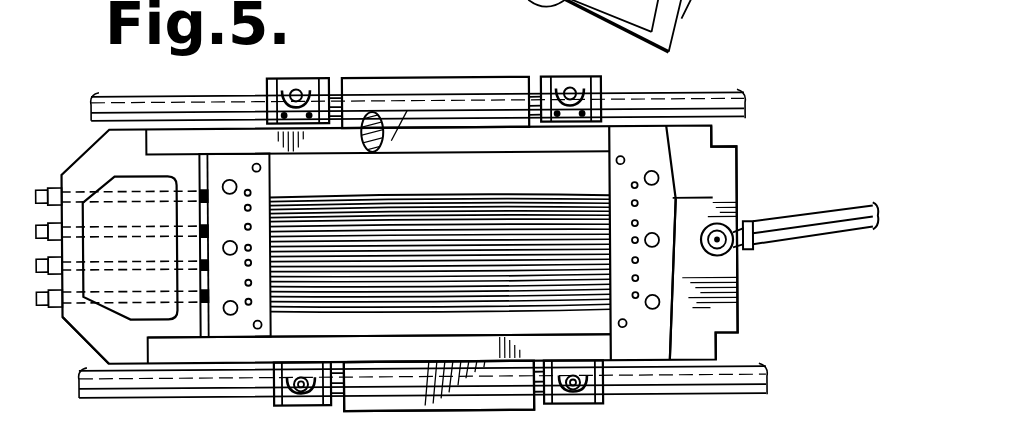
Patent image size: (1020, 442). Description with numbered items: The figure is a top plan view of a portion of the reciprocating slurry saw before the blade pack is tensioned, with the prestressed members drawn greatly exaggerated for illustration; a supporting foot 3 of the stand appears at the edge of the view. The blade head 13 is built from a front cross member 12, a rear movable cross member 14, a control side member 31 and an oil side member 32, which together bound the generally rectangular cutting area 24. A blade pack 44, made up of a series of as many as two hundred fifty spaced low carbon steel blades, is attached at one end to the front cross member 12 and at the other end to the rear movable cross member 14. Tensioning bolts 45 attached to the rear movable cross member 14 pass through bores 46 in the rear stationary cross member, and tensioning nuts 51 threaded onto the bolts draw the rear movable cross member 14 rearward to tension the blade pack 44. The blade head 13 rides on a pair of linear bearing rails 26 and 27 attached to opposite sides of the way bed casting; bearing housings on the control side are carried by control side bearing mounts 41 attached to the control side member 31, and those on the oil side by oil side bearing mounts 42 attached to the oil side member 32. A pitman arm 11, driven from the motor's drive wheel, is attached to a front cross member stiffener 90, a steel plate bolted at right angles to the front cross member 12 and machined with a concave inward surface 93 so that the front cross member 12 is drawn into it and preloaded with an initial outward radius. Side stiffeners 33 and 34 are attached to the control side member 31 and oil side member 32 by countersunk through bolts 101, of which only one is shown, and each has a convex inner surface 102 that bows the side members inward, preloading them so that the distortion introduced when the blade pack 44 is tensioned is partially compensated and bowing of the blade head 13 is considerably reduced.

The supporting feet 3 is at (530, 3).
The pitman arm 11 is at (800, 220).
The front cross member 12 is at (610, 186).
The blade head 13 is at (770, 322).
The rear movable cross member 14 is at (274, 192).
The cutting area 24 is at (435, 186).
The linear bearing rail 26 is at (748, 383).
The linear bearing rail 27 is at (680, 95).
The control side member 31 is at (323, 318).
The oil side member 32 is at (362, 150).
The side stiffener 33 is at (395, 398).
The side stiffener 34 is at (413, 85).
The control side bearing mount 41 is at (300, 412).
The oil side bearing mount 42 is at (324, 50).
The blade pack 44 is at (501, 194).
The tensioning bolts 45 is at (137, 302).
The bores 46 is at (82, 295).
The tensioning nuts 51 is at (45, 186).
The front cross member stiffener 90 is at (717, 189).
The concave inward surface 93 is at (672, 200).
The countersunk through bolts 101 is at (420, 116).
The convex inner surface 102 is at (476, 130).